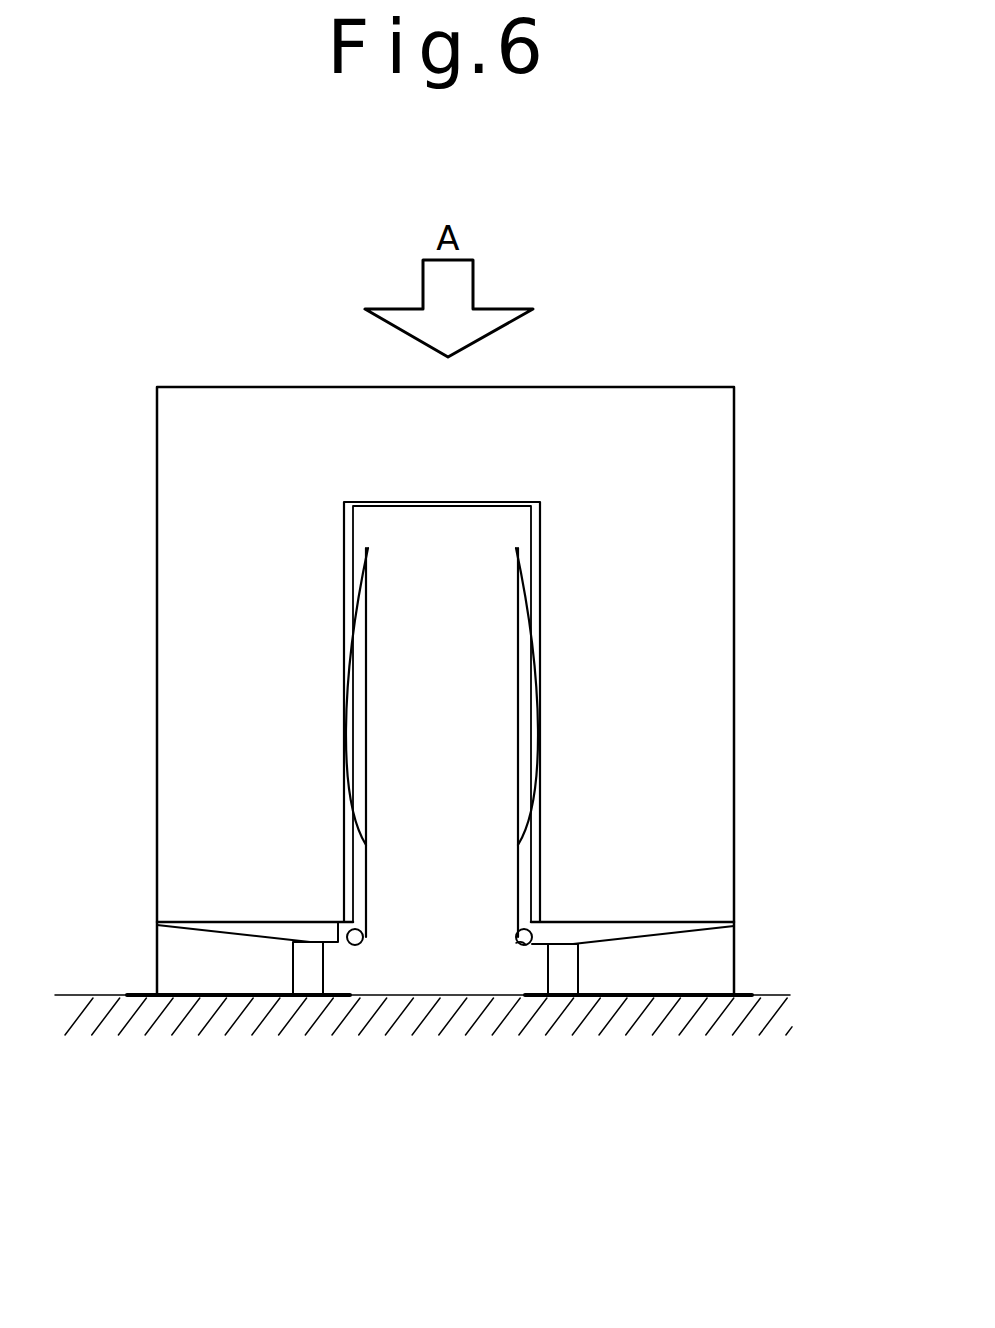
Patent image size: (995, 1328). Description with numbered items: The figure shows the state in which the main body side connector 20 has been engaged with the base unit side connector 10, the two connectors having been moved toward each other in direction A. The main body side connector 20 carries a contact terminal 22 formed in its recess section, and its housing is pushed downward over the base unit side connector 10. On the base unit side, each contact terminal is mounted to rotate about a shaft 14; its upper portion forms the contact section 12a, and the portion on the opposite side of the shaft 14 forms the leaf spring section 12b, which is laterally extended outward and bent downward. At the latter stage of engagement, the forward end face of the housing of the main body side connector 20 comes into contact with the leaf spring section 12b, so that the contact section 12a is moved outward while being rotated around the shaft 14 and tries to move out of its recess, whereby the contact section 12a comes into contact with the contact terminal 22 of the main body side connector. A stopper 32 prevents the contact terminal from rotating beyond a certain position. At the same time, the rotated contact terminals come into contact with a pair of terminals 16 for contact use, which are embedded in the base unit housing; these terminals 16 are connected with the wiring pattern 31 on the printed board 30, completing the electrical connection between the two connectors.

The base unit side connector 10 is at (708, 1005).
The contact section 12a is at (520, 613).
The leaf spring section 12b is at (272, 930).
The shaft 14 is at (525, 946).
The terminals for contact use 16 is at (208, 918).
The main body side connector 20 is at (735, 716).
The contact terminal 22 is at (541, 580).
The printed board 30 is at (210, 1005).
The wiring pattern 31 is at (140, 994).
The stopper 32 is at (307, 973).